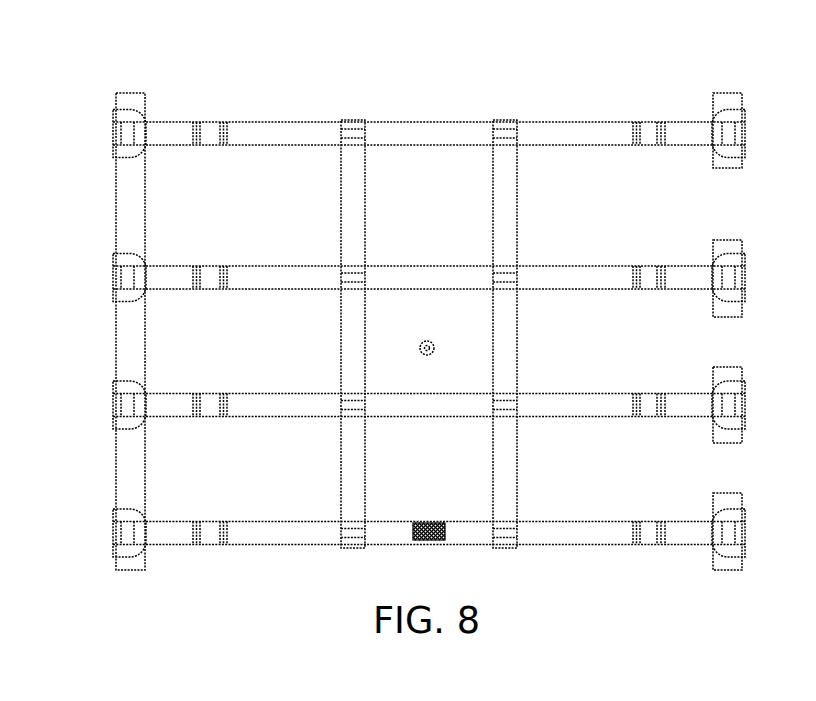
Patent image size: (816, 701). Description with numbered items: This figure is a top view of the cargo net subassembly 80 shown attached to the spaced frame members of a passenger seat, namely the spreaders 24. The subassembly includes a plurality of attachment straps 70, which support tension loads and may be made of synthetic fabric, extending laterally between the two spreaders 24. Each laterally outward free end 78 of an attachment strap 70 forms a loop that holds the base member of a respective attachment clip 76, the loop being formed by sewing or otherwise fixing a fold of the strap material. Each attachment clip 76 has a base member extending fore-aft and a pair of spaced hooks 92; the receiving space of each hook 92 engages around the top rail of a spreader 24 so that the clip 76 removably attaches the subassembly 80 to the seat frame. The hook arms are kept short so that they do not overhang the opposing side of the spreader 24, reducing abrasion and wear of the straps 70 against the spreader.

The spreader 24 is at (130, 100).
The free end 78 is at (158, 108).
The cargo net subassembly 80 is at (458, 113).
The attachment clip 76 is at (117, 152).
The attachment strap 70 is at (168, 133).
The hook 92 is at (118, 262).